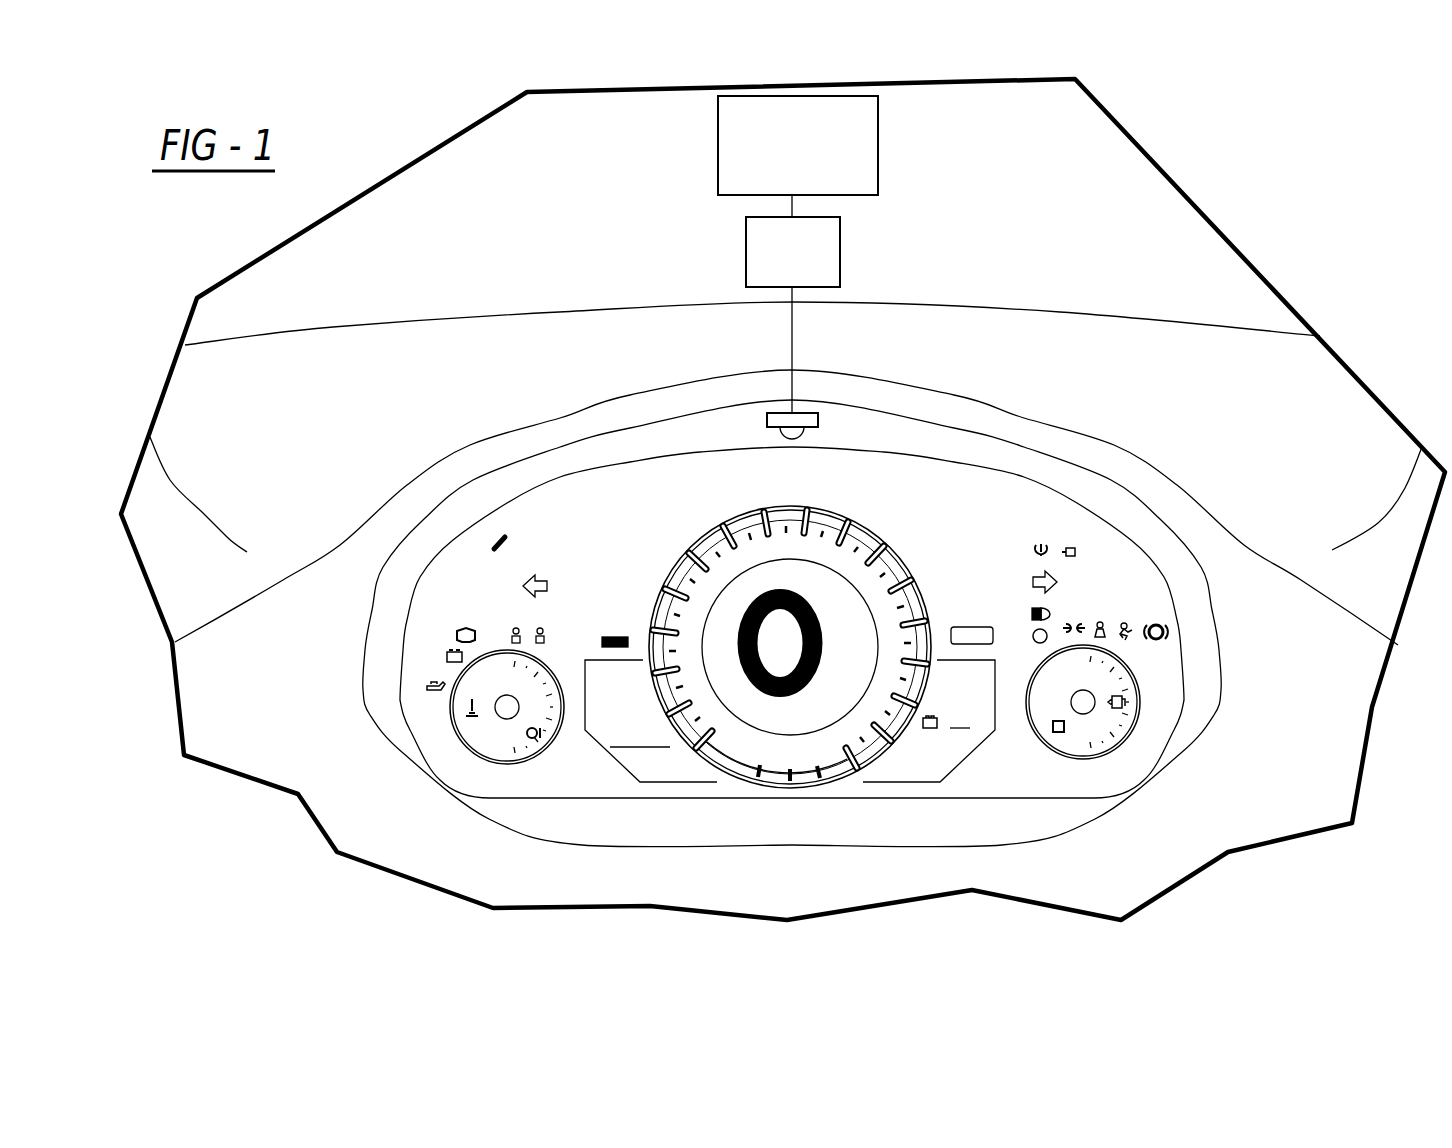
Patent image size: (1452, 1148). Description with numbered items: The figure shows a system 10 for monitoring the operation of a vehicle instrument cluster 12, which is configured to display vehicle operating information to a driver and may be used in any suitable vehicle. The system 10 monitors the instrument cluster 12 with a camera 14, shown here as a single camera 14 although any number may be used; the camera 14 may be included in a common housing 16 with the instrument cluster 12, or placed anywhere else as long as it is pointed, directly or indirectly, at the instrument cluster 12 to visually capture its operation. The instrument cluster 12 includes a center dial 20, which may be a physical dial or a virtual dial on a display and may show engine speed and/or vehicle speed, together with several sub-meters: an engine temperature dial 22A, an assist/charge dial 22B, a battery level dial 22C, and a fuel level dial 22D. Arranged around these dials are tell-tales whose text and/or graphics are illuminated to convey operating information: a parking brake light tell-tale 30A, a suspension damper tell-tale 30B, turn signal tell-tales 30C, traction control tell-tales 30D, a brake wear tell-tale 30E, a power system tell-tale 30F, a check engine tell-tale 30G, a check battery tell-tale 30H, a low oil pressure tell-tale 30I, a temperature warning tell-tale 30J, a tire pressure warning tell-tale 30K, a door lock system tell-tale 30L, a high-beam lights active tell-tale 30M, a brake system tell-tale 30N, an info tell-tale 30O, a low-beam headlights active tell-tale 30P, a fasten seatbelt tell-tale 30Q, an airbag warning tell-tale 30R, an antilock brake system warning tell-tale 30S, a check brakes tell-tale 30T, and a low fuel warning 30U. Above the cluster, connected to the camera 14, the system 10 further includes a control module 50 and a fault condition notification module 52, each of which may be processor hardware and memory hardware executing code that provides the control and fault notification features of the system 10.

The system 10 is at (1250, 190).
The instrument cluster 12 is at (880, 485).
The camera 14 is at (760, 420).
The common housing 16 is at (862, 428).
The center dial 20 is at (735, 510).
The engine temperature dial 22A is at (483, 733).
The assist/charge dial 22B is at (597, 737).
The battery level dial 22C is at (975, 746).
The fuel level dial 22D is at (1100, 722).
The parking brake light tell-tale 30A is at (533, 527).
The suspension damper tell-tale 30B is at (497, 537).
The turn signal tell-tales 30C is at (547, 588).
The traction control tell-tales 30D is at (517, 630).
The brake wear tell-tale 30E is at (420, 613).
The power system tell-tale 30F is at (417, 640).
The check engine tell-tale 30G is at (462, 630).
The check battery tell-tale 30H is at (447, 657).
The low oil pressure tell-tale 30I is at (430, 690).
The temperature warning tell-tale 30J is at (533, 733).
The tire pressure warning tell-tale 30K is at (1035, 543).
The door lock system tell-tale 30L is at (1072, 548).
The high-beam lights active tell-tale 30M is at (1032, 610).
The brake system tell-tale 30N is at (1073, 624).
The info tell-tale 30O is at (1032, 635).
The low-beam headlights active tell-tale 30P is at (1133, 586).
The fasten seatbelt tell-tale 30Q is at (1097, 620).
The airbag warning tell-tale 30R is at (1122, 632).
The antilock brake system warning tell-tale 30S is at (1168, 635).
The check brakes tell-tale 30T is at (1157, 672).
The low fuel warning 30U is at (1063, 733).
The control module 50 is at (840, 257).
The fault condition notification module 52 is at (878, 145).